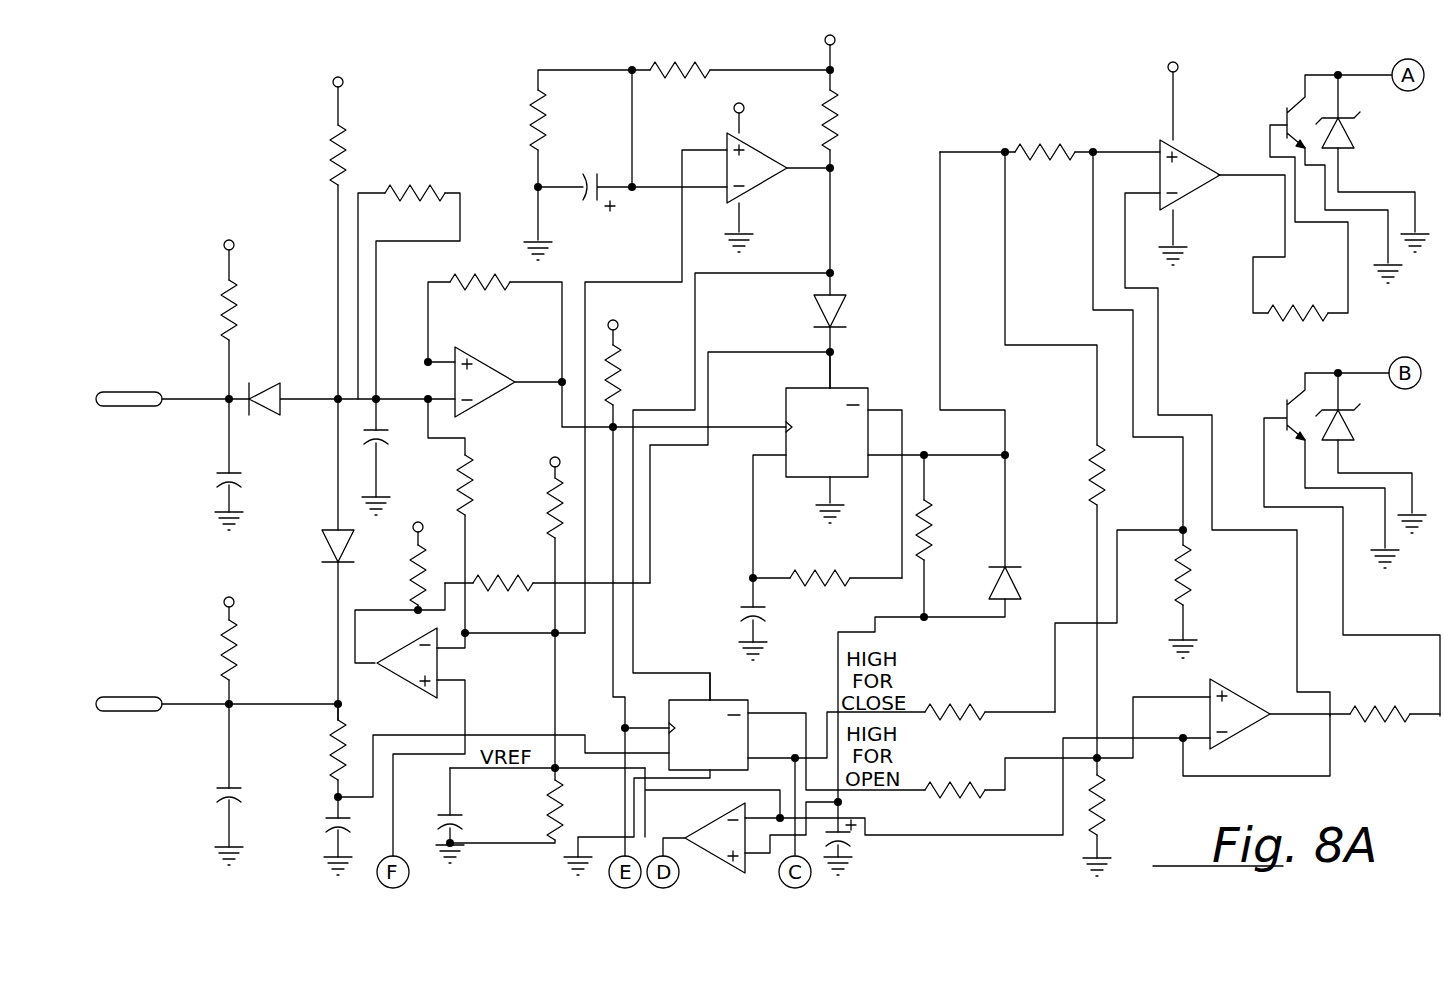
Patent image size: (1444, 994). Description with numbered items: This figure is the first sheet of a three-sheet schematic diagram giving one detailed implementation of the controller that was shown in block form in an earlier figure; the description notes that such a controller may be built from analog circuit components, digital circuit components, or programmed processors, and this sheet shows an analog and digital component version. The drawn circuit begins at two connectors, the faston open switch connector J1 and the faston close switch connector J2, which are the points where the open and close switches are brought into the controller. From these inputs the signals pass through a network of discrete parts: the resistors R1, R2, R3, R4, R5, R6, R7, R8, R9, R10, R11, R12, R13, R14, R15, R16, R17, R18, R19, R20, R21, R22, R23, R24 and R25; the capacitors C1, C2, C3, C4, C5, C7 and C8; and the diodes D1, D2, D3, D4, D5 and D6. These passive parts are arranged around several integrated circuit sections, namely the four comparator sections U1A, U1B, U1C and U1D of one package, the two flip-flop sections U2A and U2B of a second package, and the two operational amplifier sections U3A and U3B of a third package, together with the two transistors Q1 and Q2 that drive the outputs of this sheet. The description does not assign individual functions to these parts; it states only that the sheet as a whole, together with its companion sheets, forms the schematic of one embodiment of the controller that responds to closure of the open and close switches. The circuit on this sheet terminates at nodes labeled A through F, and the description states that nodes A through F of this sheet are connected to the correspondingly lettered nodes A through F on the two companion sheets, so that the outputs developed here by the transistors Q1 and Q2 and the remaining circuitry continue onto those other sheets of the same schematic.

The resistor 10K R1 is at (731, 75).
The resistor 10K R2 is at (851, 152).
The resistor 100K R3 is at (544, 165).
The resistor 100K R4 is at (495, 318).
The resistor 2.2K R5 is at (201, 343).
The resistor 2.2K R6 is at (311, 290).
The resistor 10K R7 is at (633, 574).
The resistor 100K R8 is at (409, 282).
The resistor 100K R9 is at (1050, 158).
The resistor 3.3K R10 is at (1308, 240).
The resistor 4.7K R11 is at (476, 516).
The resistor 100K R12 is at (953, 536).
The resistor 100K R13 is at (827, 585).
The resistor 2.2K R14 is at (533, 600).
The resistor 10K R15 is at (399, 553).
The resistor 100K R16 is at (1125, 601).
The resistor 2.2K R17 is at (201, 679).
The resistor 100K R18 is at (547, 586).
The resistor 100K R19 is at (989, 718).
The resistor 100K R20 is at (1209, 594).
The resistor 100K R21 is at (304, 750).
The resistor 100K R22 is at (1066, 765).
The resistor 3.3K R23 is at (1395, 722).
The resistor 100K R24 is at (1122, 817).
The resistor 2.2K R25 is at (534, 805).
The capacitor 100UF 16V C1 is at (632, 204).
The capacitor .1UF C2 is at (263, 494).
The capacitor 1/25V C3 is at (401, 457).
The capacitor 1/25V tantalum C4 is at (714, 613).
The capacitor .1UF C5 is at (194, 822).
The capacitor 1/25V C7 is at (484, 815).
The capacitor C8 is at (587, 834).
The diode 1N914 D1 is at (788, 337).
The diode 1N4004 D2 is at (344, 403).
The zener diode 1N967B D3 is at (1372, 163).
The diode 1N914 D4 is at (1008, 536).
The diode 1N4004 D5 is at (297, 618).
The zener diode 1N967B D6 is at (1371, 453).
The comparator LM339 U1A is at (707, 354).
The comparator LM339 U1B is at (495, 382).
The comparator LM339 U1C is at (411, 740).
The comparator LM339 U1D is at (742, 844).
The flip-flop 4013 U2A is at (828, 437).
The flip-flop 4013 U2B is at (744, 774).
The op-amp LM324 U3A is at (1227, 374).
The op-amp LM324 U3B is at (1266, 726).
The transistor MPS6531 Q1 is at (1297, 179).
The transistor MPS6531 Q2 is at (1316, 544).
The faston open switch connector J1 is at (172, 416).
The faston close switch connector J2 is at (217, 721).